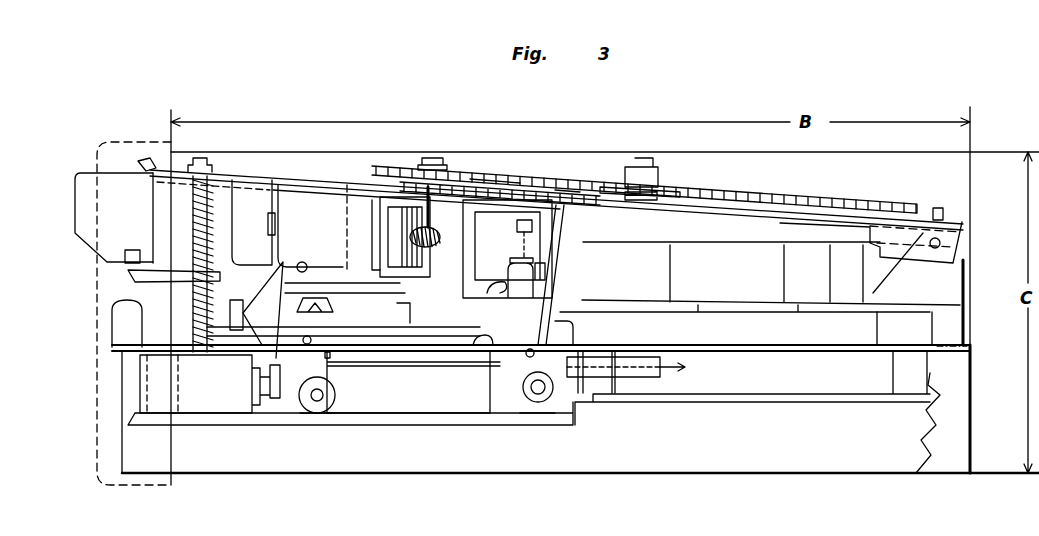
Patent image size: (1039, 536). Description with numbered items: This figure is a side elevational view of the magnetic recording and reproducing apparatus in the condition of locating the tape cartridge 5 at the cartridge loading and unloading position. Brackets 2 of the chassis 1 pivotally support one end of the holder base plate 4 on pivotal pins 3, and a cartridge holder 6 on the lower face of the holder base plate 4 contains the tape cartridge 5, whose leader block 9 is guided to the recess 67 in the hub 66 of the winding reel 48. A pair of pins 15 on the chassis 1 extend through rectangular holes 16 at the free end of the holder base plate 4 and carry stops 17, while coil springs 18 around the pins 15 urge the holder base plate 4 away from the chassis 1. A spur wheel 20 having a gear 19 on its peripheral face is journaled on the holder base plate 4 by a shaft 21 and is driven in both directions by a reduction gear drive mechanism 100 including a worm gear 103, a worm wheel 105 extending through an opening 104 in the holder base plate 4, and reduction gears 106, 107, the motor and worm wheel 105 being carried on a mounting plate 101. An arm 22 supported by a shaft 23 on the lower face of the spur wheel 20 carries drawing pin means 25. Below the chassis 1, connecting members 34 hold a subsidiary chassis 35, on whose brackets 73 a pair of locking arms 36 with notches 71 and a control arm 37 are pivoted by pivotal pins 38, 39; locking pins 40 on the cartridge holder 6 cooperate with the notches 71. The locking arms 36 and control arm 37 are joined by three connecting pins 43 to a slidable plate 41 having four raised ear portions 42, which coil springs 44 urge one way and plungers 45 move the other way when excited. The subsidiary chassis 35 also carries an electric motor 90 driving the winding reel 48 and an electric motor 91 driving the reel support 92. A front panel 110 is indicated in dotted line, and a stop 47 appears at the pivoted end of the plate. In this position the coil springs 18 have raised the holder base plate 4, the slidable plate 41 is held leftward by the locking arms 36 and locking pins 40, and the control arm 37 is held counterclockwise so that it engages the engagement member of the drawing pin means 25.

The chassis 1 is at (737, 349).
The bracket 2 is at (940, 290).
The pivotal pin 3 is at (940, 243).
The holder base plate 4 is at (700, 210).
The tape cartridge 5 is at (108, 248).
The cartridge holder 6 is at (160, 204).
The leader block 9 is at (495, 288).
The pin 15 is at (190, 293).
The rectangular hole 16 is at (227, 173).
The stop 17 is at (213, 163).
The coil spring 18 is at (195, 308).
The gear 19 is at (367, 166).
The spur wheel 20 is at (755, 190).
The shaft 21 is at (645, 157).
The arm 22 is at (561, 191).
The shaft 23 is at (428, 158).
The drawing pin means 25 is at (626, 236).
The connecting member 34 is at (162, 377).
The subsidiary chassis 35 is at (423, 418).
The locking arm 36 is at (332, 373).
The control arm 37 is at (572, 300).
The pivotal pin 38 is at (316, 397).
The pivotal pin 39 is at (541, 398).
The locking pin 40 is at (302, 262).
The slidable plate 41 is at (467, 368).
The raised ear portion 42 is at (327, 356).
The connecting pin 43 is at (309, 337).
The coil spring 44 is at (648, 376).
The plunger 45 is at (222, 407).
The stop 47 is at (944, 212).
The winding reel 48 is at (653, 270).
The hub 66 is at (770, 288).
The recess 67 is at (818, 268).
The notch 71 is at (278, 308).
The bracket 73 is at (332, 414).
The electric motor 90 is at (793, 330).
The electric motor 91 is at (480, 337).
The reel support 92 is at (405, 323).
The reduction gear drive mechanism 100 is at (414, 131).
The mounting plate 101 is at (412, 264).
The worm gear 103 is at (438, 240).
The opening 104 is at (433, 193).
The worm wheel 105 is at (407, 213).
The reduction gear 106 is at (487, 177).
The reduction gear 107 is at (563, 187).
The front panel 110 is at (113, 485).